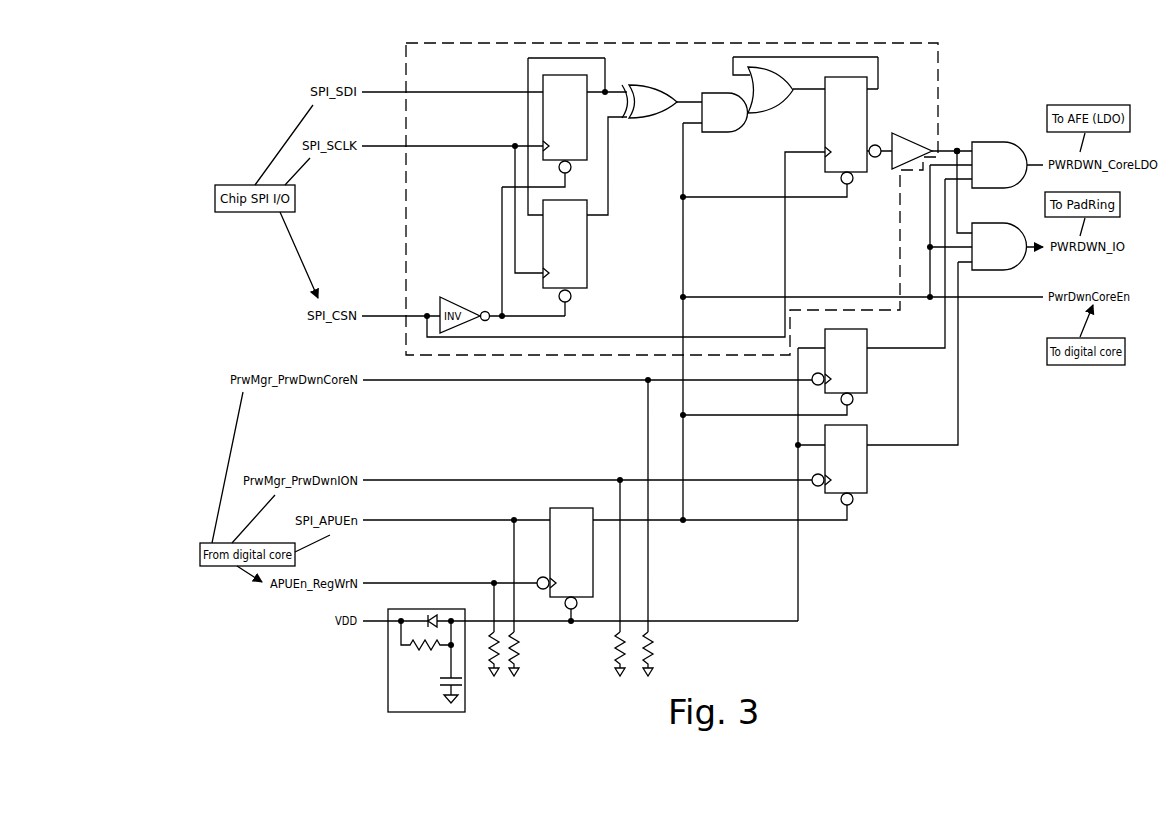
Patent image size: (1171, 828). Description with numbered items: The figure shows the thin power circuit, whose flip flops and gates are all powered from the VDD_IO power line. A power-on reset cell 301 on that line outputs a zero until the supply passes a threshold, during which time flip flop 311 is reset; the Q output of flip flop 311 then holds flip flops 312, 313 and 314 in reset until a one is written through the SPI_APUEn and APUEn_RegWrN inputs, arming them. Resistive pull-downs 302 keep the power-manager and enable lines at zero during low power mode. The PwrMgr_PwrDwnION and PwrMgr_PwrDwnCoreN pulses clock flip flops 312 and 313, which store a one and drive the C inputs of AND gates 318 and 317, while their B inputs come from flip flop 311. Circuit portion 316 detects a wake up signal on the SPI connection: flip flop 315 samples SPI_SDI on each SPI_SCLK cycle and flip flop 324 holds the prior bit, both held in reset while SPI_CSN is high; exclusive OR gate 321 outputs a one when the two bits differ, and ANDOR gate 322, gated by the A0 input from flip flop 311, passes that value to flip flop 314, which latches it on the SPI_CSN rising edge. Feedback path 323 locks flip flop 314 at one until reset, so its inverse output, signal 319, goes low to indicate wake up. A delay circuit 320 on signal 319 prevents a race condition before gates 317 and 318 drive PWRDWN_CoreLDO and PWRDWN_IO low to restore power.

The power-on reset (POR) cell 301 is at (388, 672).
The resistive pull-downs 302 is at (503, 663).
The flip flop 311 is at (589, 600).
The flip flop 312 is at (868, 465).
The flip flop 313 is at (868, 375).
The flip flop 314 is at (870, 110).
The flip flop 315 is at (552, 75).
The circuit portion 316 is at (848, 42).
The AND gate 317 is at (1003, 142).
The AND gate 318 is at (1027, 255).
The output signal 319 is at (949, 150).
The delay circuit 320 is at (893, 163).
The exclusive OR (XOR) gate 321 is at (653, 126).
The ANDOR gate 322 is at (722, 133).
The feedback path 323 is at (773, 55).
The flip flop 324 is at (588, 257).